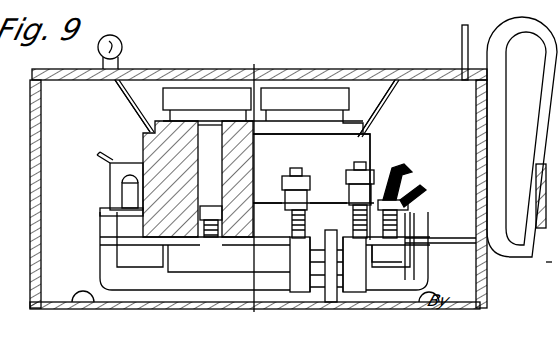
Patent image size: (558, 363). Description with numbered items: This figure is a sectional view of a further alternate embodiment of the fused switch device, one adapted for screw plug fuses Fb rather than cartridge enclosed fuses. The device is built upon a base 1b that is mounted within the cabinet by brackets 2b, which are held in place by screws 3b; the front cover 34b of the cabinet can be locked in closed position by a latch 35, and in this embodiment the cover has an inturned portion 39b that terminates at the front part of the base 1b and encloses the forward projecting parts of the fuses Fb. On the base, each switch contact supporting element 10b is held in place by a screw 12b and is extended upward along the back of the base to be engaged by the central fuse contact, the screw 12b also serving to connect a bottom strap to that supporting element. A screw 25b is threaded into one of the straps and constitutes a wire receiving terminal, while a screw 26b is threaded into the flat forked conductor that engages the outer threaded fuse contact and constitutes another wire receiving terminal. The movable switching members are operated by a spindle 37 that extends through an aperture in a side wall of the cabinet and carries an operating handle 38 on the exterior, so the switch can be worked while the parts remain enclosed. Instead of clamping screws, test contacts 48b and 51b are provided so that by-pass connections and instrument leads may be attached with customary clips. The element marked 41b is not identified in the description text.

The base 1b is at (365, 150).
The brackets 2b is at (100, 273).
The screws 3b is at (122, 200).
The switch contact supporting element 10b is at (293, 257).
The screw 12b is at (214, 204).
The screw 25b is at (412, 221).
The screw 26b is at (397, 178).
The front cover 34b is at (446, 84).
The latch 35 is at (462, 33).
The spindle 37 is at (460, 244).
The operating handle 38 is at (541, 68).
The inturned portion 39b is at (131, 101).
The bracket 41b is at (392, 237).
The test contact 48b is at (355, 170).
The test contact 51b is at (297, 172).
The screw plug fuses Fb is at (256, 99).